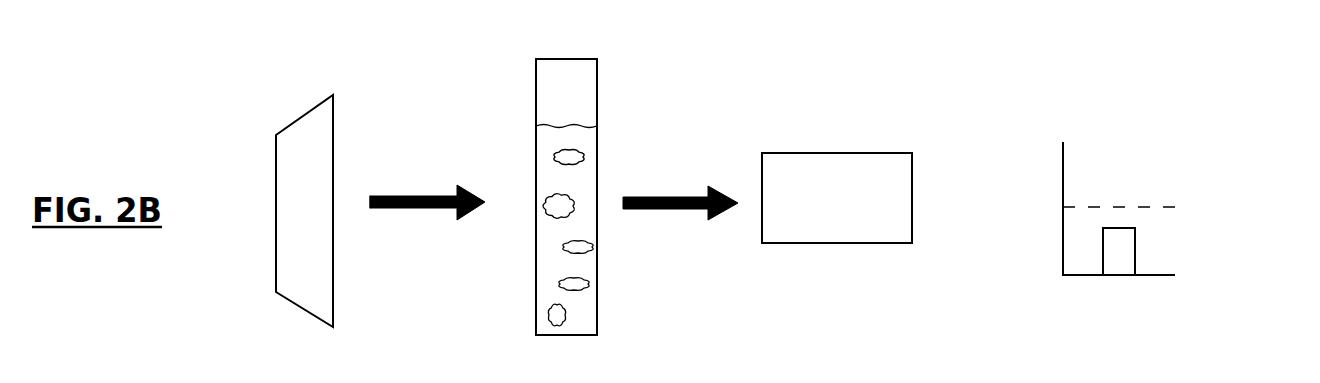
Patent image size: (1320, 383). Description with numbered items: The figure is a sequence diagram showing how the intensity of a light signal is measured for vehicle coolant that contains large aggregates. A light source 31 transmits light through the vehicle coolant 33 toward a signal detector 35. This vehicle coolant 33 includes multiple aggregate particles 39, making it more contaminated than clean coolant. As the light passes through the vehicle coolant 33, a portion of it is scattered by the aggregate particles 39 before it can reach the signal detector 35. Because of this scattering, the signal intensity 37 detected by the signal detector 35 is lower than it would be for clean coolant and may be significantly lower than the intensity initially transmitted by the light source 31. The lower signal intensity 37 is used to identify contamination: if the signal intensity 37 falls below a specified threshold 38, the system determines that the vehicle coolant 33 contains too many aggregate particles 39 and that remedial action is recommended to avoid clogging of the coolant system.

The light source 31 is at (305, 116).
The vehicle coolant 33 is at (536, 167).
The signal detector 35 is at (807, 153).
The signal intensity 37 is at (1168, 250).
The specified threshold 38 is at (1142, 207).
The aggregate particles 39 is at (578, 297).